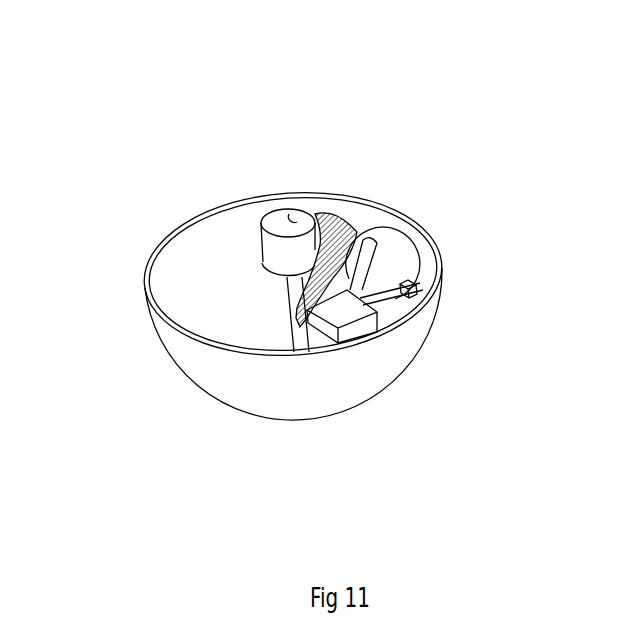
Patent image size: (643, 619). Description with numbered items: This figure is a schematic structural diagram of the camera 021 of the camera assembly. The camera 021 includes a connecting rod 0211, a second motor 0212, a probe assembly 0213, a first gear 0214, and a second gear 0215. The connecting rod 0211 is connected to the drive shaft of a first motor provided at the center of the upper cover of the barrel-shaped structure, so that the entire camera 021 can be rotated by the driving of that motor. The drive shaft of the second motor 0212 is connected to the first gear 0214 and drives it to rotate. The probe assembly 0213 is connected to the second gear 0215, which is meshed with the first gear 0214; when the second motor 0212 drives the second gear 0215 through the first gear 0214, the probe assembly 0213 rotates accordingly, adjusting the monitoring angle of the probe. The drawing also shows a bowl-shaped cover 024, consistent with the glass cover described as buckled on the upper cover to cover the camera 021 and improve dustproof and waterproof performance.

The camera 021 is at (288, 126).
The connecting rod 0211 is at (297, 213).
The second motor 0212 is at (347, 317).
The probe assembly 0213 is at (393, 262).
The first gear 0214 is at (328, 293).
The second gear 0215 is at (353, 233).
The bowl-shaped housing 024 is at (355, 387).